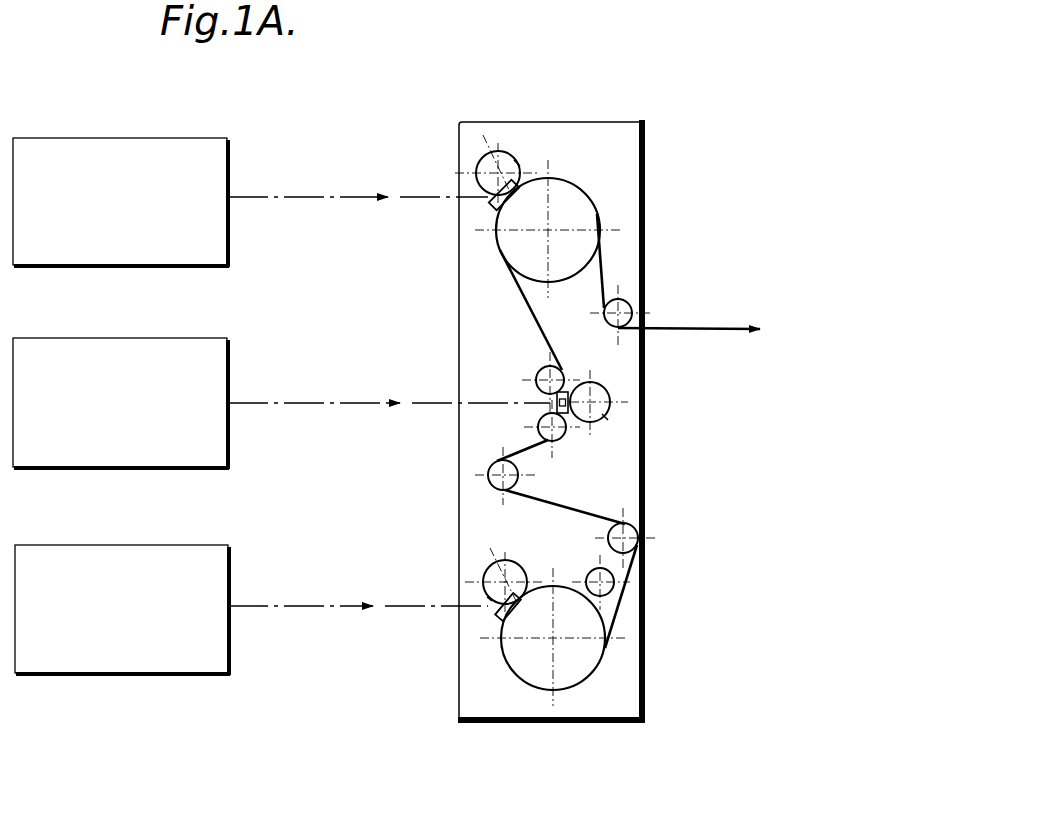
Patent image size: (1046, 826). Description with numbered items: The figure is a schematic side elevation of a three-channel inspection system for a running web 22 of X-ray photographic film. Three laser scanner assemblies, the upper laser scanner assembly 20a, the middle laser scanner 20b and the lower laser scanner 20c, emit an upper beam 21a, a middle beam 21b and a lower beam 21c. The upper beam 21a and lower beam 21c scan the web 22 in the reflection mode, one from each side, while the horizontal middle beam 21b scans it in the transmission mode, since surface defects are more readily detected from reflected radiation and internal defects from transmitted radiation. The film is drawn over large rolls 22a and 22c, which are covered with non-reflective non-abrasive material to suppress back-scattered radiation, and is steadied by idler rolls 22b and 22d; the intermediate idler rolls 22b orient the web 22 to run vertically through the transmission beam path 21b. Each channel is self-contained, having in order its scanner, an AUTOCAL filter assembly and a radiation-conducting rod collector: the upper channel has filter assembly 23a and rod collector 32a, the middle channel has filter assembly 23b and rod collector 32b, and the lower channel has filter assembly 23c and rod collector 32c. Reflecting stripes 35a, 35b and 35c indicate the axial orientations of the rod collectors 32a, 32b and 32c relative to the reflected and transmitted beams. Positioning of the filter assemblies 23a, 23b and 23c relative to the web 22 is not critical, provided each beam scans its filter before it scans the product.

The laser scanner assembly 20a is at (177, 145).
The laser scanner 20b is at (208, 348).
The laser scanner 20c is at (213, 530).
The upper beam 21a is at (368, 193).
The middle beam 21b is at (340, 404).
The lower beam 21c is at (273, 608).
The running web 22 is at (606, 567).
The large roll 22a is at (588, 271).
The idler rolls 22b is at (564, 369).
The large roll 22c is at (603, 651).
The idler rolls 22d is at (634, 313).
The AUTOCAL filter assembly 23a is at (517, 199).
The AUTOCAL filter assembly 23b is at (555, 402).
The AUTOCAL filter assembly 23c is at (521, 614).
The radiation-conducting rod collector 32a is at (519, 168).
The radiation-conducting rod collector 32b is at (604, 420).
The radiation-conducting rod collector 32c is at (488, 599).
The reflecting stripe 35a is at (486, 161).
The reflecting stripe 35b is at (612, 403).
The reflecting stripe 35c is at (488, 566).